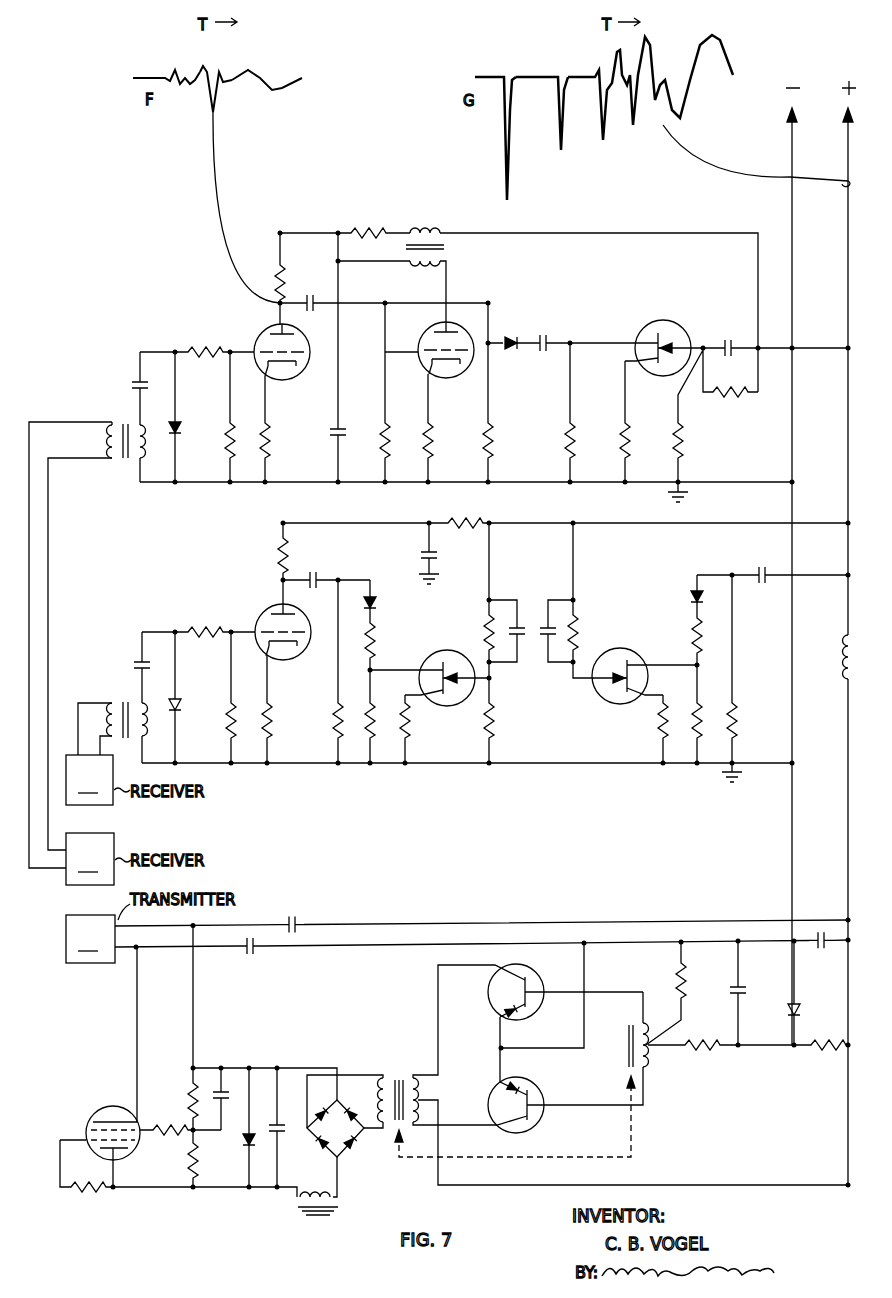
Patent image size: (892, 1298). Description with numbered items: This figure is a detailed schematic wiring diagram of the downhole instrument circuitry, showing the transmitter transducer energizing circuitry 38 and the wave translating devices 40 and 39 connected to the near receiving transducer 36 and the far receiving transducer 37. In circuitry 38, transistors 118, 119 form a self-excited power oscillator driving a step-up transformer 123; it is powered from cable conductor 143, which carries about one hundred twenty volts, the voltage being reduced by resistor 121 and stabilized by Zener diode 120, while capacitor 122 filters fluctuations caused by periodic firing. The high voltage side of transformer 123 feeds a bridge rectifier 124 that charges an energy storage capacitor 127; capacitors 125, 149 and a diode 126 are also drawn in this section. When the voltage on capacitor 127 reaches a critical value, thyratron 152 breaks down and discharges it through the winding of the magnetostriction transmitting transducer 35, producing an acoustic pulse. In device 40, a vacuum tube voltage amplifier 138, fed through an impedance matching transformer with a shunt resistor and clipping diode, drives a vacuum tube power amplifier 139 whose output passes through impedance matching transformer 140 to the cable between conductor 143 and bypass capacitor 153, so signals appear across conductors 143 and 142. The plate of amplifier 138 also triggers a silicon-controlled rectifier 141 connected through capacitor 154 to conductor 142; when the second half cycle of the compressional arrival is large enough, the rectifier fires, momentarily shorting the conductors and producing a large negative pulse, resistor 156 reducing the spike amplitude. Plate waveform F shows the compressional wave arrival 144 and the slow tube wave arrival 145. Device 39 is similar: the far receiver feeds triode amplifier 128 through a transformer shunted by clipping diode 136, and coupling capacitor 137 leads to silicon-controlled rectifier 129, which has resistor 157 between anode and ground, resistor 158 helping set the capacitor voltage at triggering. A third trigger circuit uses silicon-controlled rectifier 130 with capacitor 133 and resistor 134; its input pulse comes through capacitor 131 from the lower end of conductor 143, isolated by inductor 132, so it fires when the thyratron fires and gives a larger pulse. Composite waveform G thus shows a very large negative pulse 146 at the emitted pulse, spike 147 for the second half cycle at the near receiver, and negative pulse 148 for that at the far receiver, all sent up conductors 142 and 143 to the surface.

The compressional wave arrival 144 is at (176, 74).
The tube wave arrival 145 is at (271, 90).
The negative pulse 146 is at (504, 158).
The negative spike pulse 147 is at (558, 146).
The negative pulse 148 is at (612, 141).
The cable conductor 142 is at (790, 212).
The cable conductor 143 is at (848, 212).
The wave translating device 40 is at (169, 285).
The impedance matching transformer 140 is at (438, 222).
The capacitor 154 is at (674, 228).
The vacuum tube amplifier 138 is at (284, 380).
The vacuum tube amplifier 139 is at (462, 376).
The silicon-controlled rectifier 141 is at (666, 378).
The bypass capacitor 153 is at (335, 438).
The resistor 156 is at (684, 428).
The wave translating device 39 is at (169, 565).
The capacitor 137 is at (314, 574).
The vacuum tube amplifier 128 is at (272, 658).
The clipping diode 136 is at (178, 694).
The resistor 158 is at (484, 632).
The capacitor 133 is at (554, 623).
The resistor 134 is at (577, 632).
The resistor 157 is at (495, 722).
The silicon-controlled rectifier 129 is at (458, 708).
The silicon-controlled rectifier 130 is at (632, 708).
The capacitor 131 is at (766, 564).
The inductor 132 is at (840, 644).
The far receiving transducer 37 is at (89, 780).
The near receiving transducer 36 is at (90, 859).
The transmitting transducer 35 is at (90, 939).
The transmitter transducer energizing circuitry 38 is at (87, 1015).
The capacitor 125 is at (258, 952).
The capacitor 149 is at (832, 934).
The thyratron 152 is at (114, 1102).
The diode 126 is at (244, 1144).
The energy storage capacitor 127 is at (281, 1142).
The rectifier bridge 124 is at (344, 1156).
The step-up transformer 123 is at (396, 1074).
The transistor 118 is at (494, 1006).
The transistor 119 is at (494, 1092).
The capacitor 122 is at (735, 992).
The Zener diode 120 is at (796, 1002).
The resistor 121 is at (831, 1056).